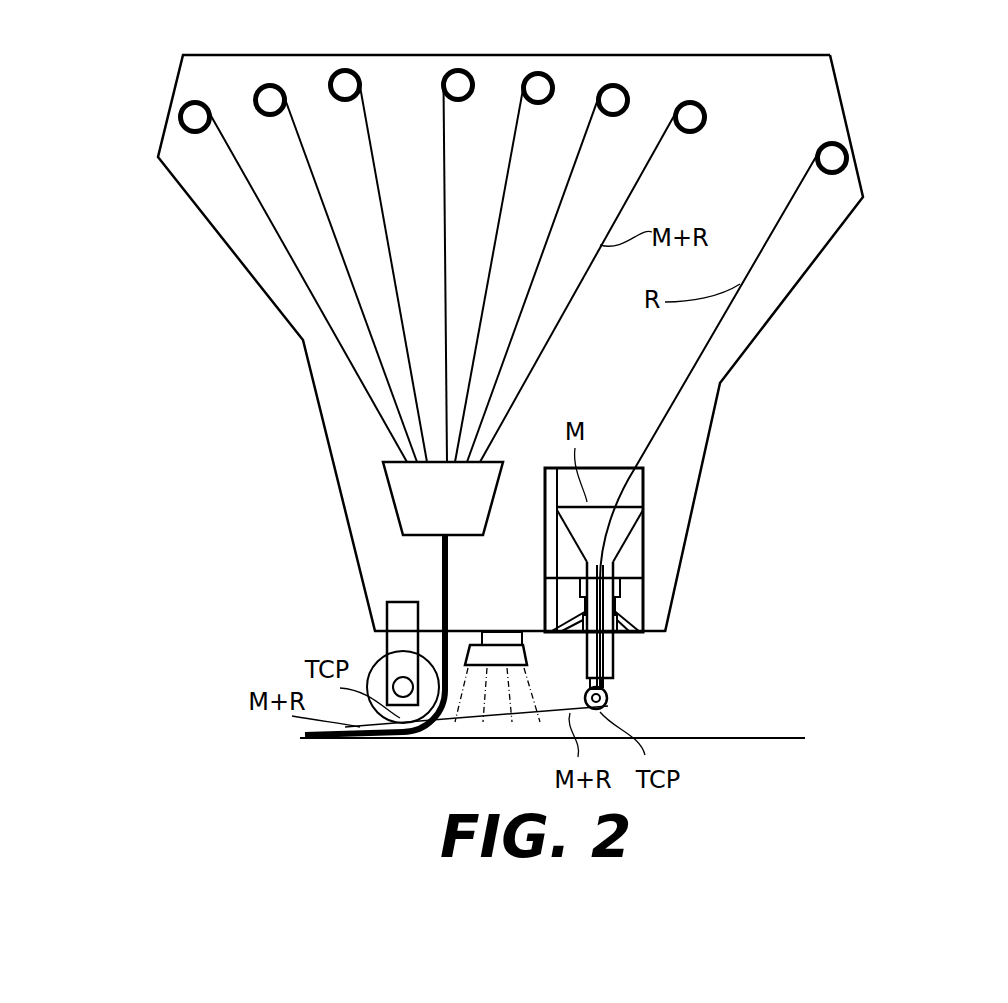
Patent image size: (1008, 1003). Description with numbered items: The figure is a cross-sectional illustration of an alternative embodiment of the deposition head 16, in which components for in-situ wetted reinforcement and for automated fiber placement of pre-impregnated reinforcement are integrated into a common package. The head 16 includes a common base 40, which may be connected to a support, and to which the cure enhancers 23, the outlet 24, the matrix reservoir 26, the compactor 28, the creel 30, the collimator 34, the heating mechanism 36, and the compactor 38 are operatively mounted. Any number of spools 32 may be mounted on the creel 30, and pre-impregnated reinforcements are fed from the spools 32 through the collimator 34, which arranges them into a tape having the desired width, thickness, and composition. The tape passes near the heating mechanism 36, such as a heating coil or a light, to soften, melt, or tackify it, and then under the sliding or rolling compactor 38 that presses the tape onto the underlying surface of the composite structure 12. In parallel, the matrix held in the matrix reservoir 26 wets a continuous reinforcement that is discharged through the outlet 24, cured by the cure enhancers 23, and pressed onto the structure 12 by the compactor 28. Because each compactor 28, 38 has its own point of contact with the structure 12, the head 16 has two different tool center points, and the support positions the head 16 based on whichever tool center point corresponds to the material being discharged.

The composite structure 12 is at (504, 776).
The deposition head 16 is at (106, 705).
The cure enhancer 23 is at (562, 633).
The outlet 24 is at (617, 663).
The matrix reservoir 26 is at (628, 521).
The compactor 28 is at (609, 698).
The creel 30 is at (395, 193).
The spools 32 is at (340, 70).
The collimator 34 is at (432, 509).
The heating mechanism 36 is at (520, 630).
The compactor 38 is at (385, 657).
The common base 40 is at (820, 256).